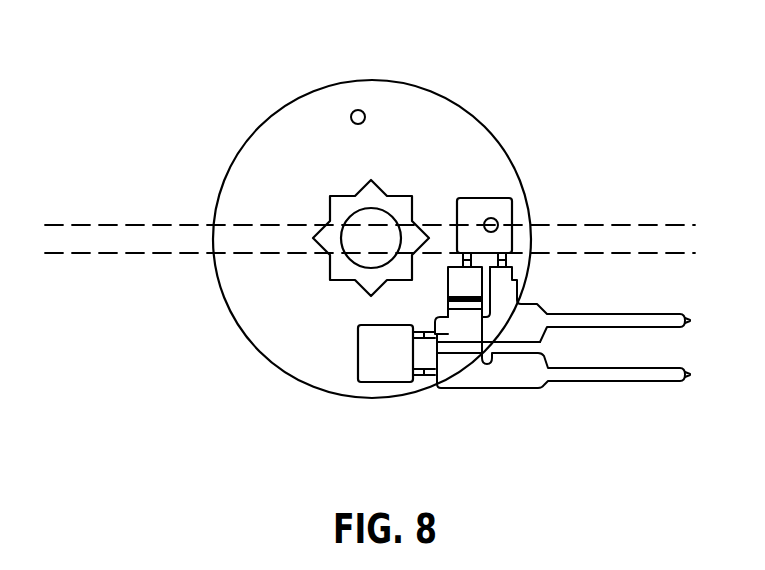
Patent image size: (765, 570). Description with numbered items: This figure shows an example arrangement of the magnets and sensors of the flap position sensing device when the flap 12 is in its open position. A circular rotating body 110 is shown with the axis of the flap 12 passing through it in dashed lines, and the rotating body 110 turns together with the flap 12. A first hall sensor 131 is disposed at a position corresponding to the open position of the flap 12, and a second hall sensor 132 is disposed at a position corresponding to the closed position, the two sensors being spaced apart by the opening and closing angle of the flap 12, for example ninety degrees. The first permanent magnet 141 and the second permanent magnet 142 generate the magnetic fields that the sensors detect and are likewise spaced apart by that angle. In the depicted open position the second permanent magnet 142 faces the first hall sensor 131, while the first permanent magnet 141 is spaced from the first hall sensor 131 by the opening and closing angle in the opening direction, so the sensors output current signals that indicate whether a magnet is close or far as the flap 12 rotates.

The flap 12 is at (130, 224).
The rotating body 110 is at (268, 333).
The first hall sensor 131 is at (481, 198).
The second hall sensor 132 is at (387, 368).
The first permanent magnet 141 is at (358, 110).
The second permanent magnet 142 is at (496, 221).